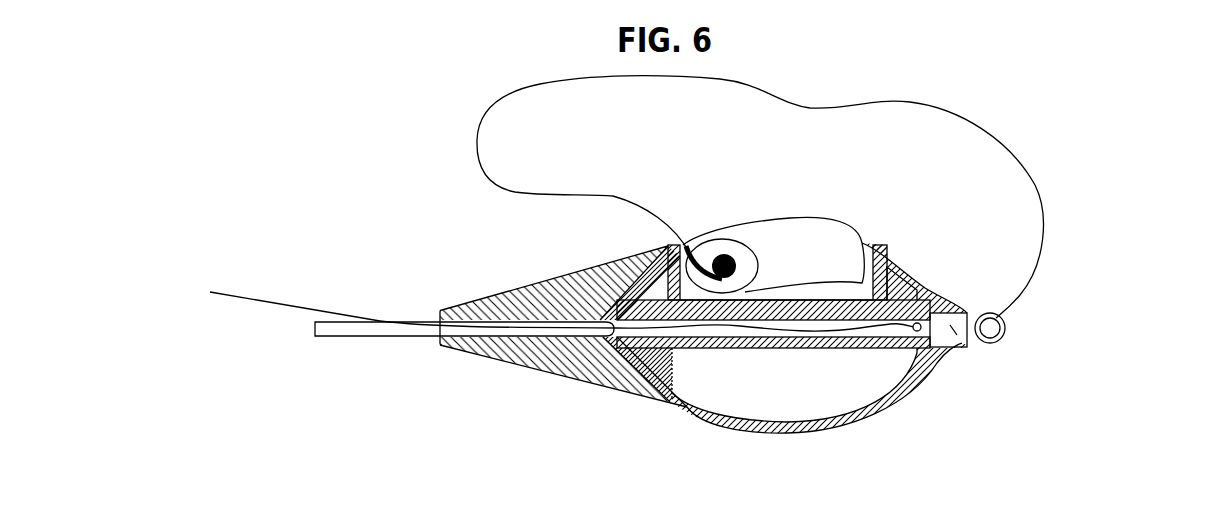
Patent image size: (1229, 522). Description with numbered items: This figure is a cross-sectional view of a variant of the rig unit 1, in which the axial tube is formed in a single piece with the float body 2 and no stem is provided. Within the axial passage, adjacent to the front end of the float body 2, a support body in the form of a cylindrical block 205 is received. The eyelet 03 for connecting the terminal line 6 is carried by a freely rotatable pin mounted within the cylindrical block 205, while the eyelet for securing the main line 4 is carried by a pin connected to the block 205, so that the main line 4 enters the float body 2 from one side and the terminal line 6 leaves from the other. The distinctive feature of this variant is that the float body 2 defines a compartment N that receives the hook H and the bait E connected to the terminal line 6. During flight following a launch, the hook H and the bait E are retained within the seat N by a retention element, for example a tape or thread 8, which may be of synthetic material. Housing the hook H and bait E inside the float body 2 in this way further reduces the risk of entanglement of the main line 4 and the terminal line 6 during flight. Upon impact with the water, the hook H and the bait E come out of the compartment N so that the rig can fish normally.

The rig unit 1 is at (1073, 178).
The float body 2 is at (870, 420).
The main line 4 is at (280, 303).
The terminal line 6 is at (968, 110).
The tape or thread 8 is at (763, 213).
The hook H is at (715, 240).
The bait E is at (780, 250).
The compartment N is at (880, 268).
The eyelet 03 is at (1005, 336).
The cylindrical block 205 is at (960, 352).